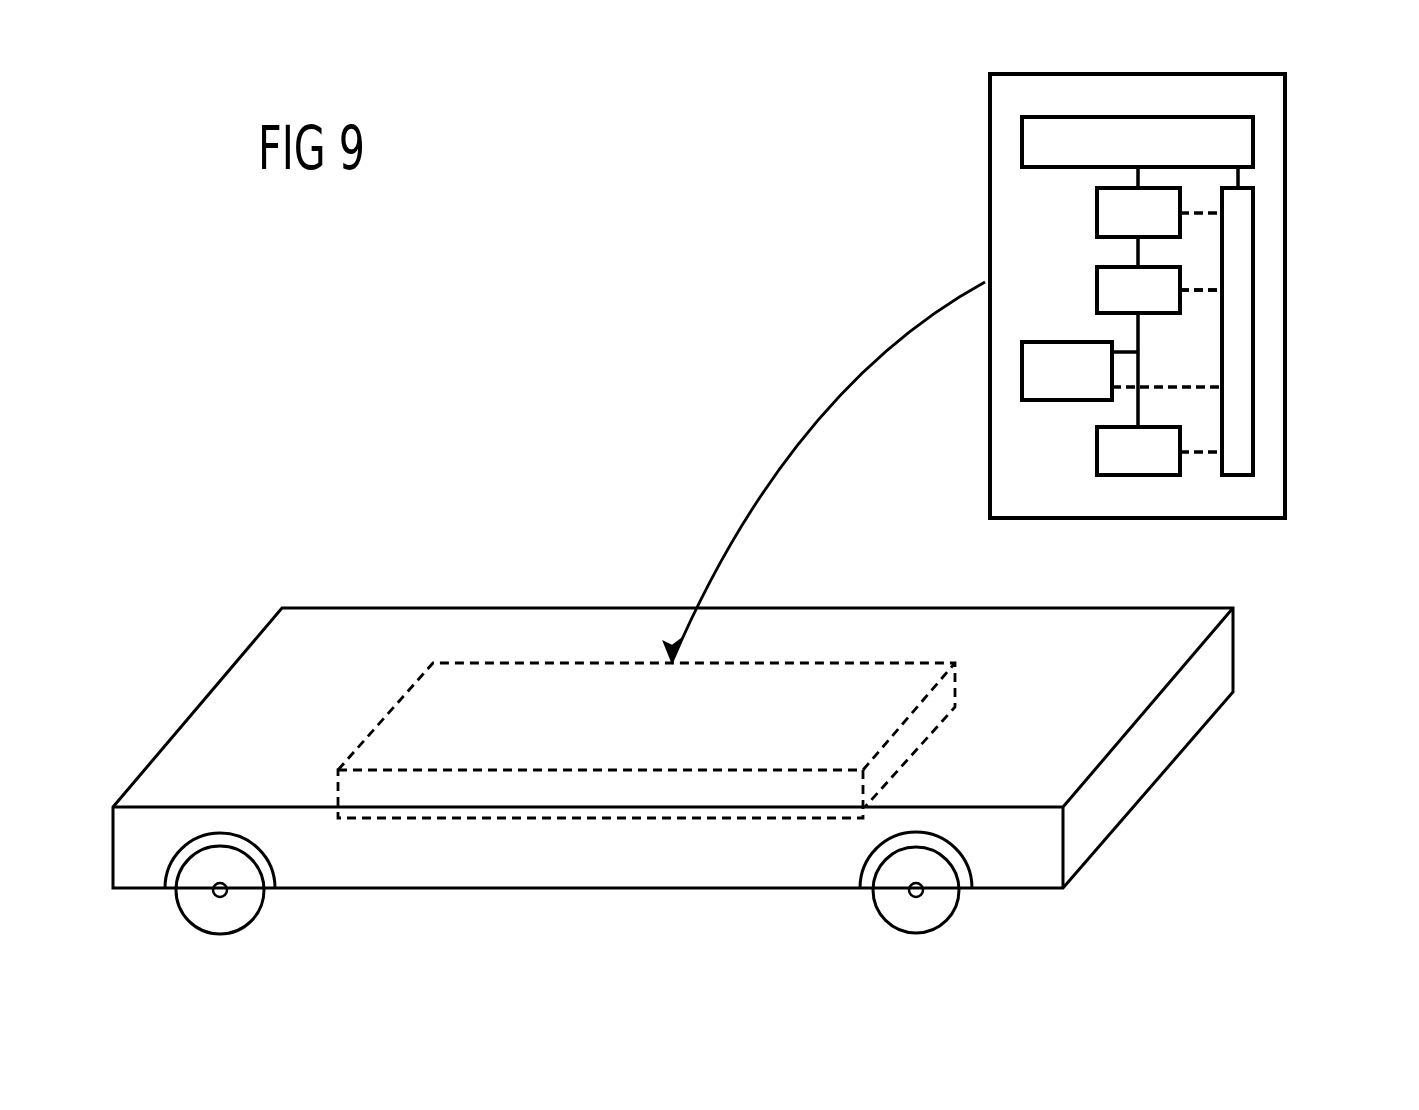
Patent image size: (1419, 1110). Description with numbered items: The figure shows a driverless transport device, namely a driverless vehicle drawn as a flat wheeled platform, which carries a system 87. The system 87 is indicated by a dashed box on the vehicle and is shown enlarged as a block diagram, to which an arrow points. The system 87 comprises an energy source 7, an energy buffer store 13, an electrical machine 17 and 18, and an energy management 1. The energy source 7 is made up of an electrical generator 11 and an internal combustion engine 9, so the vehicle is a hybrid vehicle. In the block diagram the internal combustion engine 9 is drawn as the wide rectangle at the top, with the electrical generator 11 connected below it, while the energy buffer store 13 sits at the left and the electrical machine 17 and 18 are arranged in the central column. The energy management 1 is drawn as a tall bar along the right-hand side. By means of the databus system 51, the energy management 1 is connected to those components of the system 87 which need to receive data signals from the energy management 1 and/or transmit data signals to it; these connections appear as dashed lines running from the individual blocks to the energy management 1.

The energy management 1 is at (1253, 395).
The energy source 7 is at (1097, 205).
The internal combustion engine 9 is at (1186, 117).
The electrical generator 11 is at (1182, 197).
The energy buffer store 13 is at (1022, 378).
The electrical machine 17 is at (1138, 475).
The electrical machine 18 is at (1097, 278).
The databus system 51 is at (1197, 290).
The system 87 is at (787, 663).